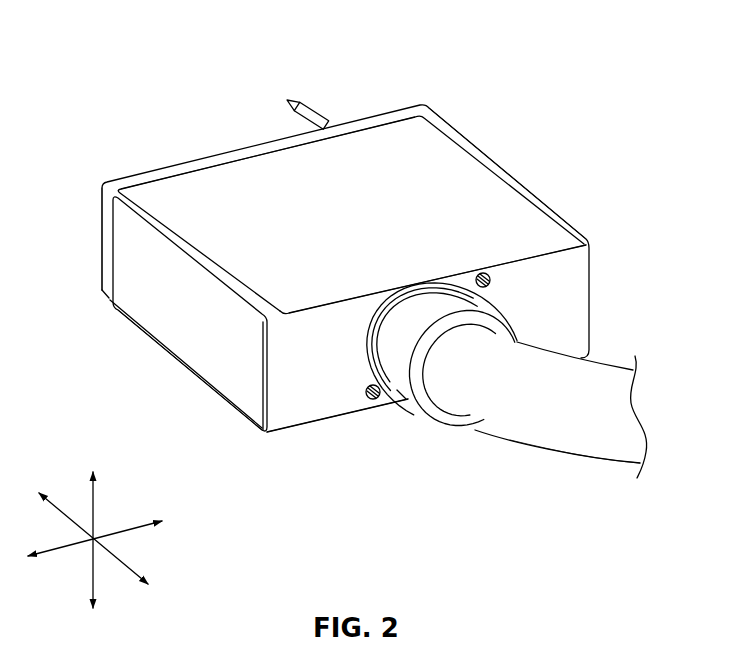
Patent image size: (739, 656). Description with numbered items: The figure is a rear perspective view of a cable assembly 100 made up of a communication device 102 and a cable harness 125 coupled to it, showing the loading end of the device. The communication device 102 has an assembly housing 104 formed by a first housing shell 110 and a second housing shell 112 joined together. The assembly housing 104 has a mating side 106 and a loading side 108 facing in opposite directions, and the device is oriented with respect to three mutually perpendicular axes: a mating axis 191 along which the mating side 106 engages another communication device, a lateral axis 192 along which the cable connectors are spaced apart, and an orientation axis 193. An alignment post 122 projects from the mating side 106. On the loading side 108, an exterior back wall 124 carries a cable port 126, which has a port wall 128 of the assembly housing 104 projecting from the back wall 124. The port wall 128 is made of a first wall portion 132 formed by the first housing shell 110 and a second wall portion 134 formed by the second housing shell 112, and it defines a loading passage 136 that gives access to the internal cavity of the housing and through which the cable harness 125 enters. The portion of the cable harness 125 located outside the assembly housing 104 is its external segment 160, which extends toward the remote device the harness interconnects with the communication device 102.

The cable assembly 100 is at (132, 76).
The communication device 102 is at (484, 124).
The assembly housing 104 is at (487, 207).
The mating side 106 is at (252, 114).
The loading side 108 is at (360, 437).
The first housing shell 110 is at (377, 153).
The second housing shell 112 is at (155, 320).
The alignment post 122 is at (315, 110).
The exterior back wall 124 is at (570, 282).
The cable harness 125 is at (548, 468).
The cable port 126 is at (462, 350).
The port wall 128 is at (481, 301).
The first wall portion 132 is at (457, 308).
The second wall portion 134 is at (395, 403).
The loading passage 136 is at (441, 422).
The external segment 160 is at (564, 418).
The mating axis 191 is at (58, 508).
The lateral axis 192 is at (128, 527).
The orientation axis 193 is at (92, 570).